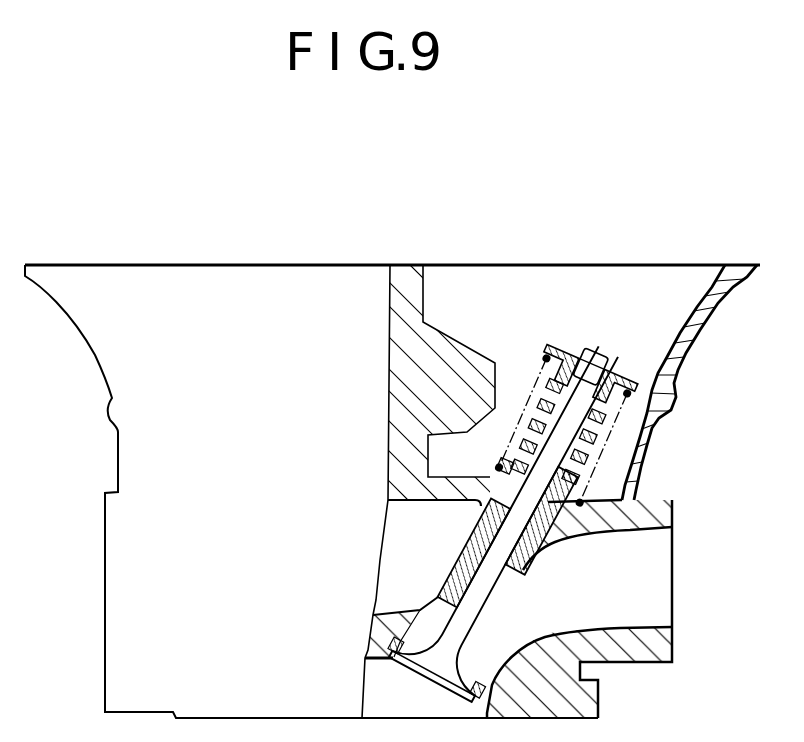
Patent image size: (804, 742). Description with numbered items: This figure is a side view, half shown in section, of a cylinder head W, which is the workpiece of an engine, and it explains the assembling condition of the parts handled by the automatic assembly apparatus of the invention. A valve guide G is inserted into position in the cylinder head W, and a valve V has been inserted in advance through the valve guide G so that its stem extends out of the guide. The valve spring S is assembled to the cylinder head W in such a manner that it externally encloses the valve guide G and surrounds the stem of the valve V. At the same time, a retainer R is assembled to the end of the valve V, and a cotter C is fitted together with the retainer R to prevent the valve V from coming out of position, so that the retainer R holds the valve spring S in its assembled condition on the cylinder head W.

The valve spring S is at (543, 355).
The retainer R is at (561, 346).
The cotter C is at (607, 377).
The cylinder head W is at (672, 370).
The valve guide G is at (552, 547).
The valve V is at (486, 603).